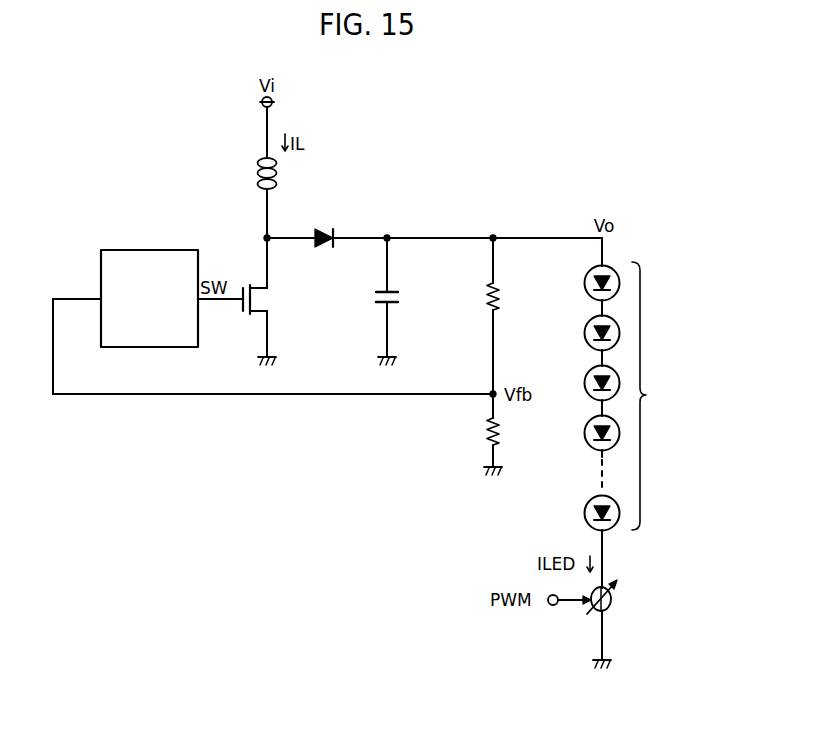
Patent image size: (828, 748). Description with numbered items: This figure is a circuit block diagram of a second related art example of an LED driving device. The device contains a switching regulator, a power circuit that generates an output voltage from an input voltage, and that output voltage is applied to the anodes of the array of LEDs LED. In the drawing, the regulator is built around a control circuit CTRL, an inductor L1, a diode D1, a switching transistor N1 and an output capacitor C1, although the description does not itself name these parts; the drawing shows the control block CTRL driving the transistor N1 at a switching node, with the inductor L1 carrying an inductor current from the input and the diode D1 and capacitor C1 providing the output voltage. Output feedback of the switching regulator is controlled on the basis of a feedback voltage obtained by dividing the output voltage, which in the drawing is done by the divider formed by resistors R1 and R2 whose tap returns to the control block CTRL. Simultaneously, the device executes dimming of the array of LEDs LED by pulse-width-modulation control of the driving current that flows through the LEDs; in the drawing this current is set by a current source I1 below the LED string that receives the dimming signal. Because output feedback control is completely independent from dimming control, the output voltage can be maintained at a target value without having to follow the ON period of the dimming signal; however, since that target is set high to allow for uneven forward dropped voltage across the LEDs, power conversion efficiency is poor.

The control circuit CTRL is at (149, 298).
The inductor L1 is at (256, 174).
The diode D1 is at (329, 227).
The NMOS switching transistor N1 is at (268, 300).
The output capacitor C1 is at (397, 298).
The feedback resistor R1 is at (504, 300).
The feedback resistor R2 is at (504, 432).
The array of LEDs LED is at (634, 396).
The variable current source I1 is at (614, 600).